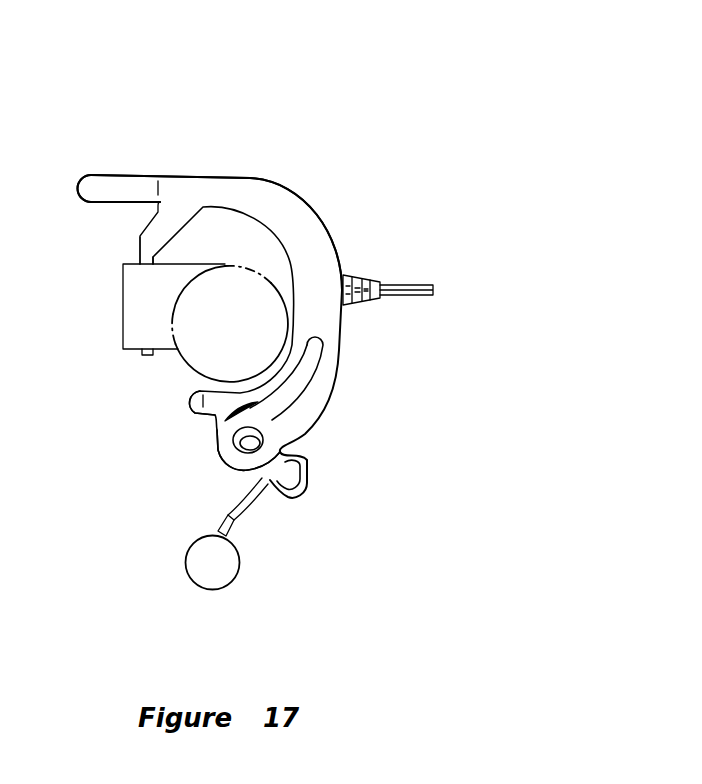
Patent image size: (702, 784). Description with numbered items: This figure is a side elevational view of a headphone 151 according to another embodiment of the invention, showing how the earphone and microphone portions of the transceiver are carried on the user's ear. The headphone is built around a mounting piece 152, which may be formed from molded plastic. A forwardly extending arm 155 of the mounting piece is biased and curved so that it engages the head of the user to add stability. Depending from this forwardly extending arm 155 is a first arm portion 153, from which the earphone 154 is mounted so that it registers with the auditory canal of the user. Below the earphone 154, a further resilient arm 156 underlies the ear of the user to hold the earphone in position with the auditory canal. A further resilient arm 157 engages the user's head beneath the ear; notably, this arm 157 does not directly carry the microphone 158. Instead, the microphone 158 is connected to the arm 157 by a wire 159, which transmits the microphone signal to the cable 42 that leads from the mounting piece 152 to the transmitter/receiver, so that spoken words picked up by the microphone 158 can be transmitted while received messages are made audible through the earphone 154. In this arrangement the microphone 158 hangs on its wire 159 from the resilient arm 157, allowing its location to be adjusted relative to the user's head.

The headphone 151 is at (300, 179).
The mounting piece 152 is at (232, 181).
The first arm portion 153 is at (143, 245).
The earphone 154 is at (195, 350).
The forwardly extending arm 155 is at (103, 190).
The resilient arm 156 is at (200, 410).
The resilient arm 157 is at (277, 425).
The microphone 158 is at (222, 580).
The wire 159 is at (265, 487).
The cable 42 is at (398, 283).